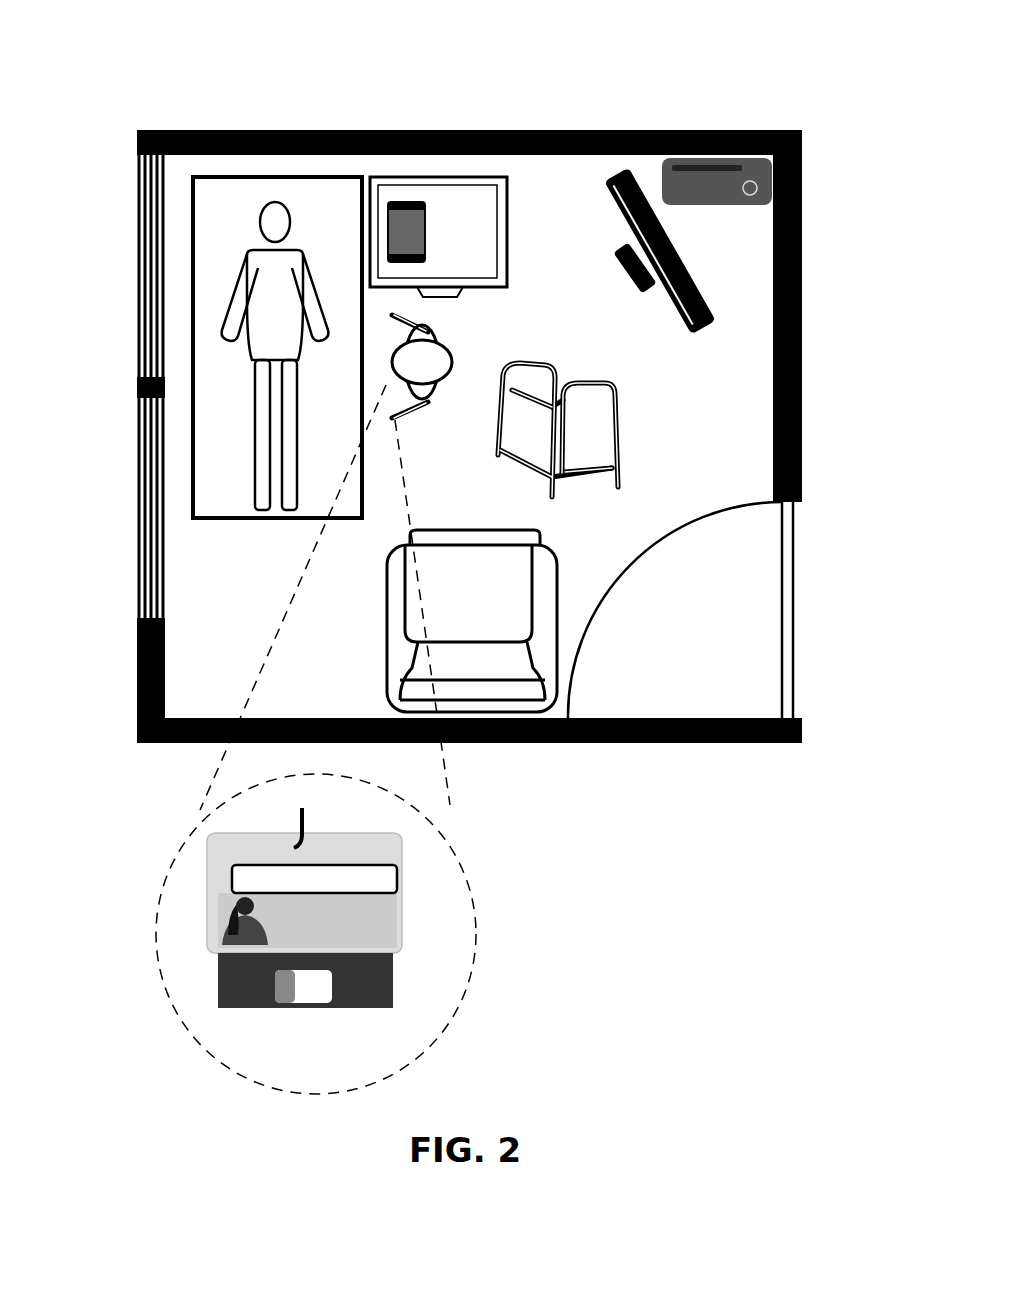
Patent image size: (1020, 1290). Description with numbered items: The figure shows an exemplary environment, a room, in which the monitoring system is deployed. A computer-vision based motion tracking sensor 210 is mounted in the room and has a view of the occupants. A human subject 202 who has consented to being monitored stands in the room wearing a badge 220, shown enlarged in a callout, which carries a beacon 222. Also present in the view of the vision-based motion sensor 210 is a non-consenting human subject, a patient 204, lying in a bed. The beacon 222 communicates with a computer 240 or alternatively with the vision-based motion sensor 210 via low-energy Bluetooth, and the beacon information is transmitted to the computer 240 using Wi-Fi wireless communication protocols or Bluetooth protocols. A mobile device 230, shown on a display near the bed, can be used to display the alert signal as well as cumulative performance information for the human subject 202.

The human subject 202 is at (430, 362).
The patient 204 is at (275, 287).
The computer-vision based motion tracking sensor 210 is at (623, 177).
The badge 220 is at (370, 907).
The beacon 222 is at (315, 982).
The mobile device 230 is at (407, 230).
The computer 240 is at (730, 160).